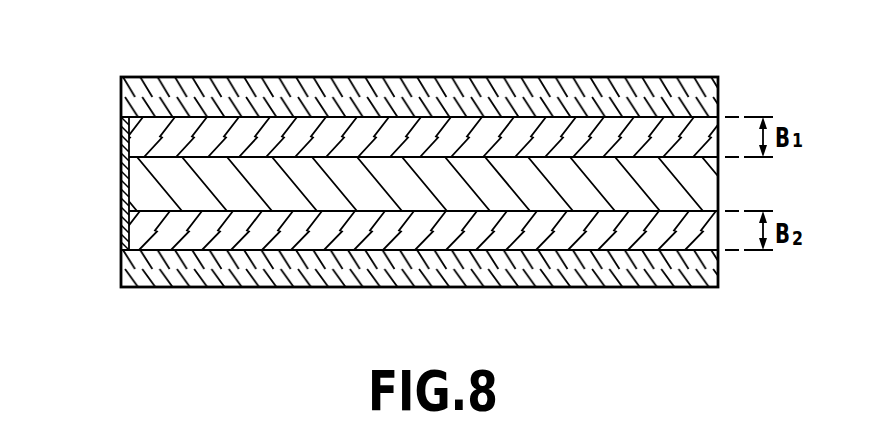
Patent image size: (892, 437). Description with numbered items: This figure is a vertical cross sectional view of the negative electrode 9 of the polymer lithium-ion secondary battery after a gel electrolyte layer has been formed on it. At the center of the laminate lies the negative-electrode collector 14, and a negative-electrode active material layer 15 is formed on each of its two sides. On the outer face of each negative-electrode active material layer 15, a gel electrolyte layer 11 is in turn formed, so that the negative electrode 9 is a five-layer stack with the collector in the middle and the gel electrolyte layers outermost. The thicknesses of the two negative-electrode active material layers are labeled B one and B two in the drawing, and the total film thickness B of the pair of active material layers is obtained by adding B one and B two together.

The negative electrode 9 is at (637, 69).
The gel electrolyte layer 11 is at (137, 96).
The negative-electrode collector 14 is at (137, 184).
The negative-electrode active material layer 15 is at (137, 141).